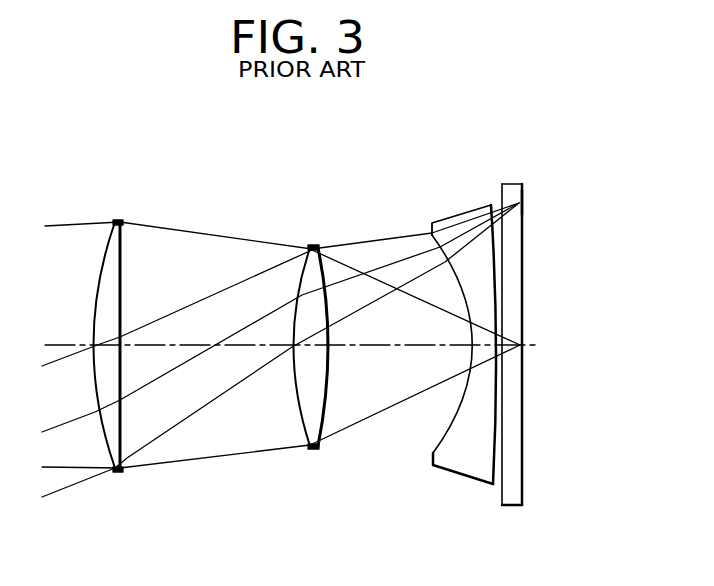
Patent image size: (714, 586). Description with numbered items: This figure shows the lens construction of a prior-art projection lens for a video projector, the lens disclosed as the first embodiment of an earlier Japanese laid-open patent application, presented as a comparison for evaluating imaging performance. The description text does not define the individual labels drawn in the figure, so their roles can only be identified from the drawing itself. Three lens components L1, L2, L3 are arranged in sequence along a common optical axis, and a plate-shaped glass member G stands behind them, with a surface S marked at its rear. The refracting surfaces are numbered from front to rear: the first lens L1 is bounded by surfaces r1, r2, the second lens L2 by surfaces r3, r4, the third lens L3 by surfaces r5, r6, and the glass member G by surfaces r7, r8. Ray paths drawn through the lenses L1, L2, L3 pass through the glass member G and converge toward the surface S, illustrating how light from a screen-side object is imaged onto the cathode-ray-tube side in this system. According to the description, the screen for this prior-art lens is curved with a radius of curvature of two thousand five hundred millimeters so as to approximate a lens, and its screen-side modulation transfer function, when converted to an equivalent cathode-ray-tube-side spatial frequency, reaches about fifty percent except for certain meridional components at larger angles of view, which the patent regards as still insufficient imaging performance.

The first lens L1 is at (114, 338).
The second lens L2 is at (311, 326).
The third lens L3 is at (447, 340).
The cover glass G is at (517, 340).
The image surface S is at (522, 198).
The first surface of first lens r1 is at (107, 466).
The second surface of first lens r2 is at (125, 466).
The first surface of second lens r3 is at (300, 444).
The second surface of second lens r4 is at (320, 444).
The first surface of third lens r5 is at (437, 447).
The second surface of third lens r6 is at (488, 471).
The first surface of cover glass r7 is at (500, 495).
The second surface of cover glass r8 is at (524, 494).